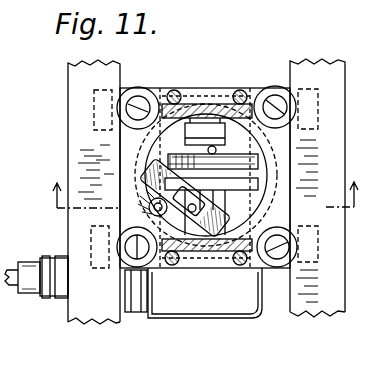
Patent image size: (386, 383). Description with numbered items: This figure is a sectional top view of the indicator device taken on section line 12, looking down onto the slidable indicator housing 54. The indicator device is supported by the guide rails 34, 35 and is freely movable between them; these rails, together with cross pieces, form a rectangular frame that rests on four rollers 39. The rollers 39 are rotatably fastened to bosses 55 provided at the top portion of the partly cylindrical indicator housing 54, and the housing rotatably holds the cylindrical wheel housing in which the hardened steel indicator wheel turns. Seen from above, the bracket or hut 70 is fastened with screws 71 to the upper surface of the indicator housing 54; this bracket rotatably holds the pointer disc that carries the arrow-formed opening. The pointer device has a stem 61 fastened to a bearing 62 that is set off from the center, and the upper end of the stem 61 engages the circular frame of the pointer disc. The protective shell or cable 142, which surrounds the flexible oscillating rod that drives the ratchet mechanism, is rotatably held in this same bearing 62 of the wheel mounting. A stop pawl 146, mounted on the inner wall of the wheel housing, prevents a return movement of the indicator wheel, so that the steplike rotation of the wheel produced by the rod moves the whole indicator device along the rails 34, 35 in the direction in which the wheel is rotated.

The section line 12- 12 is at (205, 188).
The guide rail 34 is at (301, 68).
The guide rail 35 is at (72, 104).
The roller 39 is at (104, 90).
The indicator housing 54 is at (258, 88).
The boss 55 is at (299, 263).
The stem 61 is at (220, 210).
The bearing 62 is at (178, 170).
The bracket or hut 70 is at (202, 104).
The screw 71 is at (174, 90).
The protective shell or cable 142 is at (112, 216).
The stop pawl 146 is at (258, 161).